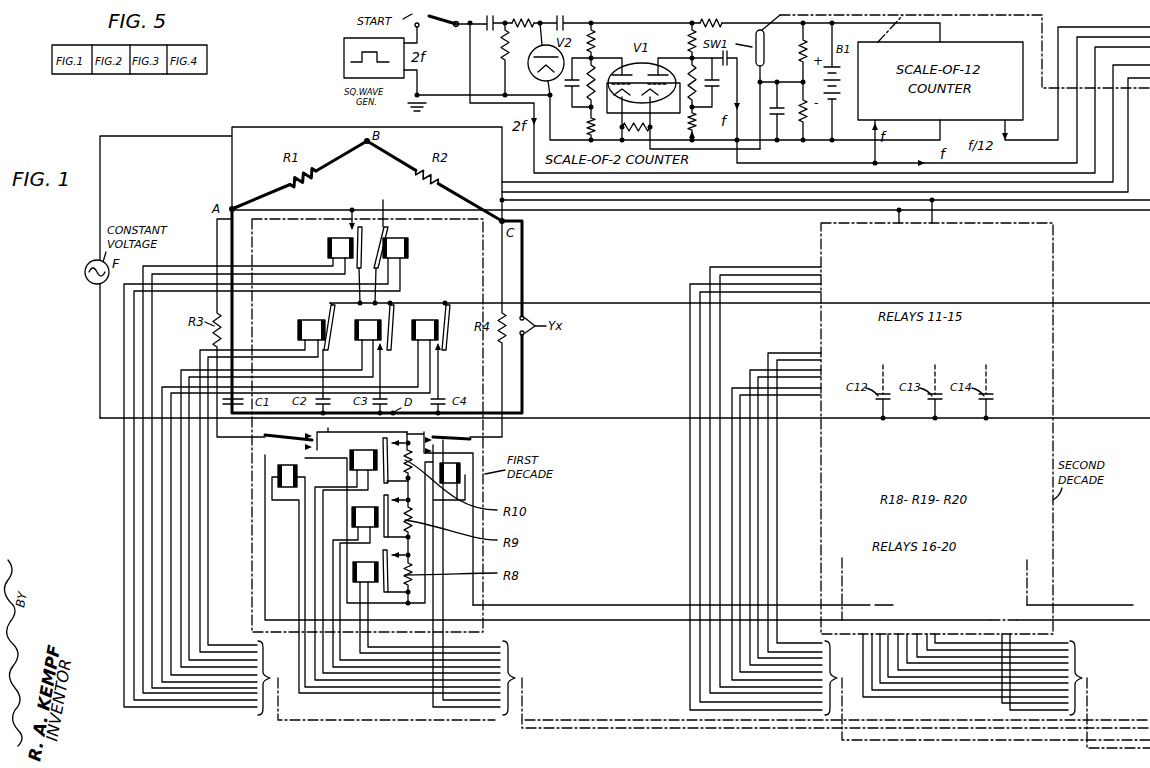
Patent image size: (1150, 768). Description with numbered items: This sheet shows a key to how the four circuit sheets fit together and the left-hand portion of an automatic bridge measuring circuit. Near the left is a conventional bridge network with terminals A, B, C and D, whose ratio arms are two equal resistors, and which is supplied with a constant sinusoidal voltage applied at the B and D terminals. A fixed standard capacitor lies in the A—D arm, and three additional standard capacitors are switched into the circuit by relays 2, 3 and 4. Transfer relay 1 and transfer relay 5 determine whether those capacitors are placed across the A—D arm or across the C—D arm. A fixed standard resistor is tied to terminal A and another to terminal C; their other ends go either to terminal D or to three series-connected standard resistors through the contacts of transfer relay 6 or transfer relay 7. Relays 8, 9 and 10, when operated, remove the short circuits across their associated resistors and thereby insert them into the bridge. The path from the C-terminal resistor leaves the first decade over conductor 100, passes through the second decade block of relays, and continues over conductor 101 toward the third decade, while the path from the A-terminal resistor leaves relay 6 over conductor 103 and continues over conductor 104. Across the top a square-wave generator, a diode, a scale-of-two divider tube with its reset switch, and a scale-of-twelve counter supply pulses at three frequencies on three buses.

The transfer relay 1 is at (340, 248).
The relay 2 is at (311, 330).
The relay 3 is at (368, 330).
The relay 4 is at (425, 330).
The transfer relay 5 is at (395, 248).
The transfer relay 6 is at (287, 476).
The transfer relay 7 is at (450, 473).
The relay 8 is at (365, 572).
The relay 9 is at (365, 517).
The relay 10 is at (363, 460).
The conductor 100 is at (610, 598).
The conductor 101 is at (1099, 602).
The conductor 103 is at (581, 623).
The conductor 104 is at (1086, 624).